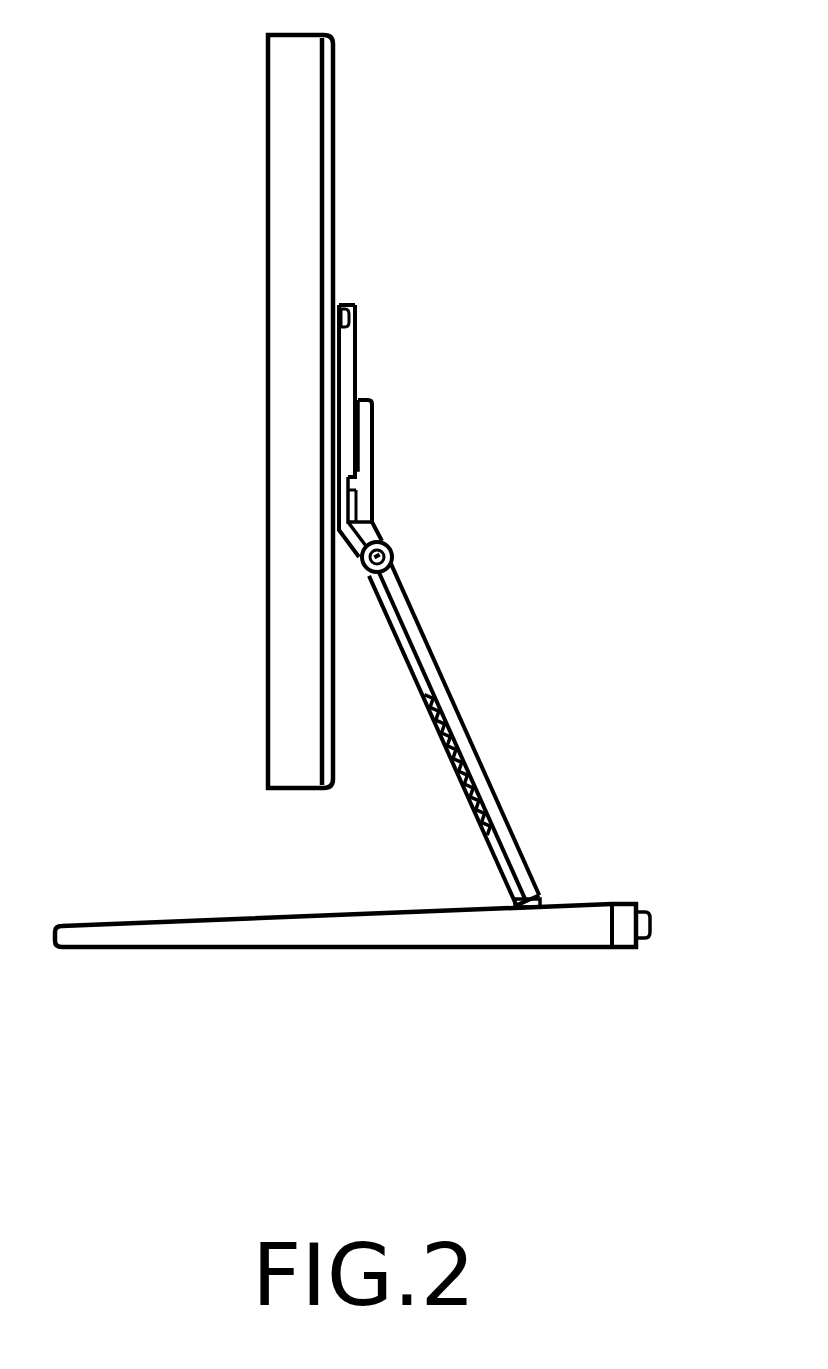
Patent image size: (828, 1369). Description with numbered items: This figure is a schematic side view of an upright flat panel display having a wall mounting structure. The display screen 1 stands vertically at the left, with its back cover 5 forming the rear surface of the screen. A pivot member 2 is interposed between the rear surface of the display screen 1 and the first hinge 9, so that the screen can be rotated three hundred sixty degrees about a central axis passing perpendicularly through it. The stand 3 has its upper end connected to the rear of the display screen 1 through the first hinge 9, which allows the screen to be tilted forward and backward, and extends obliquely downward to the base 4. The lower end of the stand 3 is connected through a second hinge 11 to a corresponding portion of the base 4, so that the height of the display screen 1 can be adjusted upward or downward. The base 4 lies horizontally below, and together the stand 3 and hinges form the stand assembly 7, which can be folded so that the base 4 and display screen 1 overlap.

The display screen 1 is at (268, 115).
The back cover 5 is at (333, 110).
The pivot member 2 is at (357, 357).
The first hinge 9 is at (393, 552).
The stand assembly 7 is at (504, 594).
The stand 3 is at (462, 712).
The second hinge 11 is at (545, 903).
The base 4 is at (352, 945).